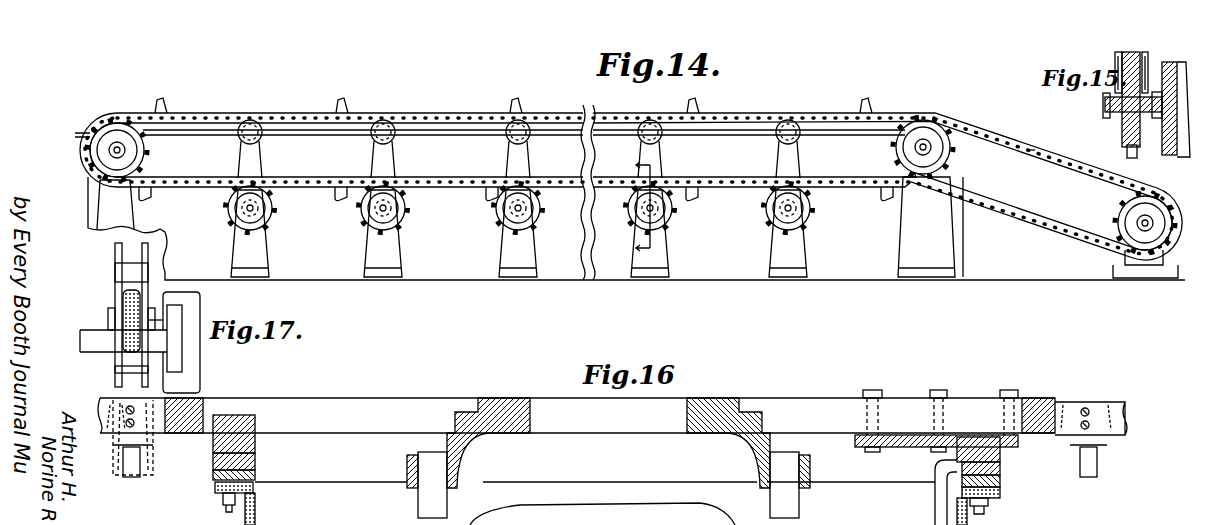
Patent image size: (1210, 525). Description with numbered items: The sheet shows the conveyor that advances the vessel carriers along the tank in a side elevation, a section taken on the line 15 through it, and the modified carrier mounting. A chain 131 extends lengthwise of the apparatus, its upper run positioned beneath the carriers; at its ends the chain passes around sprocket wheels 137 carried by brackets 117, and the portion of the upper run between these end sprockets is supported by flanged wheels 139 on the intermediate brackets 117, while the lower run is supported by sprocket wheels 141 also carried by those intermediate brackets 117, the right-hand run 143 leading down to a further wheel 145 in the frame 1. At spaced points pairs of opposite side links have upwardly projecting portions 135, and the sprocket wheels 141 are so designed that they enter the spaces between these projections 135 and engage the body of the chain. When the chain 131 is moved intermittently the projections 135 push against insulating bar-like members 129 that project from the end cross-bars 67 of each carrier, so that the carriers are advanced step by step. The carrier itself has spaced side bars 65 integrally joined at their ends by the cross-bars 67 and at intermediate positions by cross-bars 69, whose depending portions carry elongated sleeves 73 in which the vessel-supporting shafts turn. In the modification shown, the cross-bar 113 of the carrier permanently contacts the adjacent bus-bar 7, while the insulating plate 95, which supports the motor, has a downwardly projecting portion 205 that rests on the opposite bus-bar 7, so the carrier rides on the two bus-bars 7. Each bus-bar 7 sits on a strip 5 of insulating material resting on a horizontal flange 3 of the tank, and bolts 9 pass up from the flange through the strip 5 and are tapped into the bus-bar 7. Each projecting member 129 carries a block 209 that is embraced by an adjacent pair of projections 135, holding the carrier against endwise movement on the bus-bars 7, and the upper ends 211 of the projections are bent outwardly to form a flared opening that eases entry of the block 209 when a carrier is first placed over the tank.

In FIG. 14, the conveyor frame 1 is at (88, 197).
In FIG. 16, the horizontal flange 3 is at (215, 490).
In FIG. 16, the strip of insulating material 5 is at (255, 476).
In FIG. 16, the bus-bar 7 is at (255, 462).
In FIG. 16, the bolt 9 is at (228, 508).
In FIG. 14, the cable 15 is at (630, 206).
In FIG. 16, the side bar 65 is at (390, 398).
In FIG. 17, the cross-bar 67 is at (200, 353).
In FIG. 16, the intermediate cross-bar 69 is at (520, 433).
In FIG. 16, the elongated sleeve 73 is at (418, 504).
In FIG. 16, the plate of insulating material 95 is at (898, 447).
In FIG. 16, the cross-bar 113 is at (255, 445).
In FIG. 14, the bracket 117 is at (127, 221).
In FIG. 15, the bracket 117 is at (1182, 150).
In FIG. 17, the projecting bar-like member 129 is at (100, 352).
In FIG. 16, the projecting bar-like member 129 is at (105, 398).
In FIG. 14, the chain 131 is at (438, 178).
In FIG. 15, the chain 131 is at (1146, 52).
In FIG. 17, the chain 131 is at (115, 272).
In FIG. 16, the chain 131 is at (118, 477).
In FIG. 14, the upwardly projecting portion 135 is at (167, 108).
In FIG. 15, the upwardly projecting portion 135 is at (1168, 62).
In FIG. 17, the upwardly projecting portion 135 is at (160, 320).
In FIG. 16, the upwardly projecting portion 135 is at (113, 448).
In FIG. 14, the sprocket wheel 137 is at (147, 156).
In FIG. 14, the flanged wheel 139 is at (260, 141).
In FIG. 14, the sprocket wheel 141 is at (276, 212).
In FIG. 15, the sprocket wheel 141 is at (1125, 132).
In FIG. 14, the inclined chain run 143 is at (1045, 150).
In FIG. 14, the tail sprocket 145 is at (1135, 223).
In FIG. 16, the downwardly projecting portion 205 is at (1000, 455).
In FIG. 17, the block 209 is at (123, 300).
In FIG. 16, the block 209 is at (135, 478).
In FIG. 17, the outwardly bent upper end 211 is at (108, 318).
In FIG. 16, the outwardly bent upper end 211 is at (98, 418).